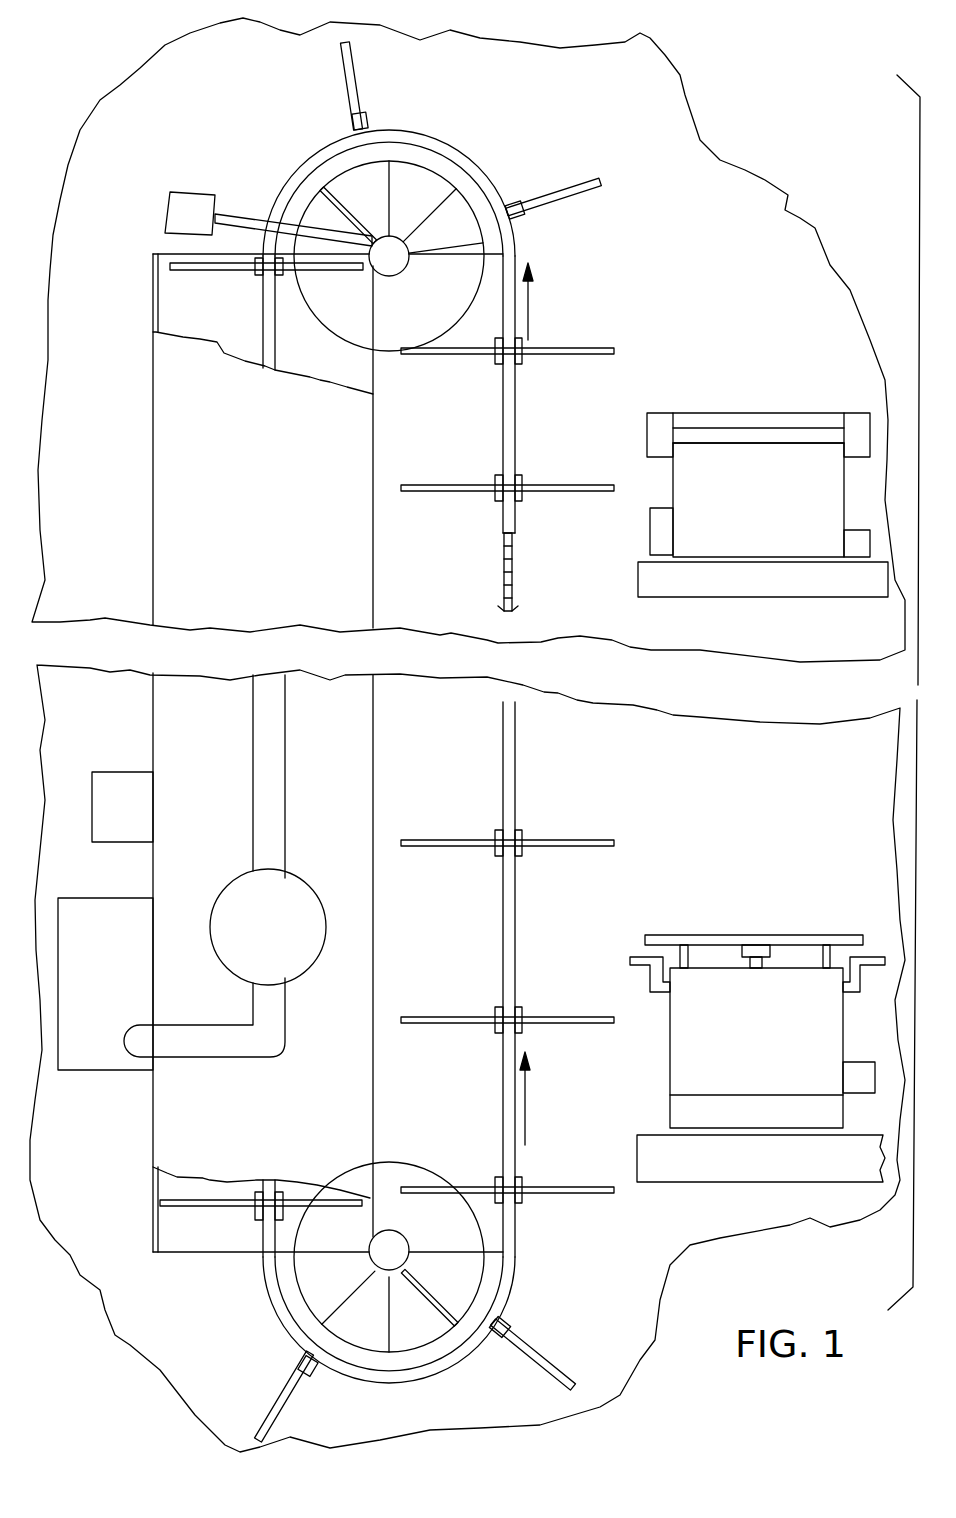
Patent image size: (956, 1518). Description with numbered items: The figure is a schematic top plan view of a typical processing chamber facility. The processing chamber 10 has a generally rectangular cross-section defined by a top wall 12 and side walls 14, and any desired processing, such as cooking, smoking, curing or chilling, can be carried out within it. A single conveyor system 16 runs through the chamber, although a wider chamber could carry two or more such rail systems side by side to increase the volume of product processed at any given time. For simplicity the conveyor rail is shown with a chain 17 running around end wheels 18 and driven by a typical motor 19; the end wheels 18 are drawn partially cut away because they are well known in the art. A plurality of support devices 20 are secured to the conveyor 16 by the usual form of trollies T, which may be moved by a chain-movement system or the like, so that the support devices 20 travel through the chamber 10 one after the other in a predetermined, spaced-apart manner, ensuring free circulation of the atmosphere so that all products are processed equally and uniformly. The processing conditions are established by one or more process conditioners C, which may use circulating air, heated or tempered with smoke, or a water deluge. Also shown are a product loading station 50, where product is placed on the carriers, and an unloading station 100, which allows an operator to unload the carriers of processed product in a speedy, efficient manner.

The processing chamber 10 is at (118, 645).
The top wall 12 is at (237, 492).
The side walls 14 is at (152, 1218).
The conveyor system 16 is at (262, 297).
The chain 17 is at (512, 592).
The end wheels 18 is at (437, 210).
The motor 19 is at (188, 200).
The support devices 20 is at (586, 352).
The product loading station 50 is at (772, 378).
The unloading station 100 is at (722, 915).
The process conditioners C is at (305, 935).
The trollies T is at (497, 830).